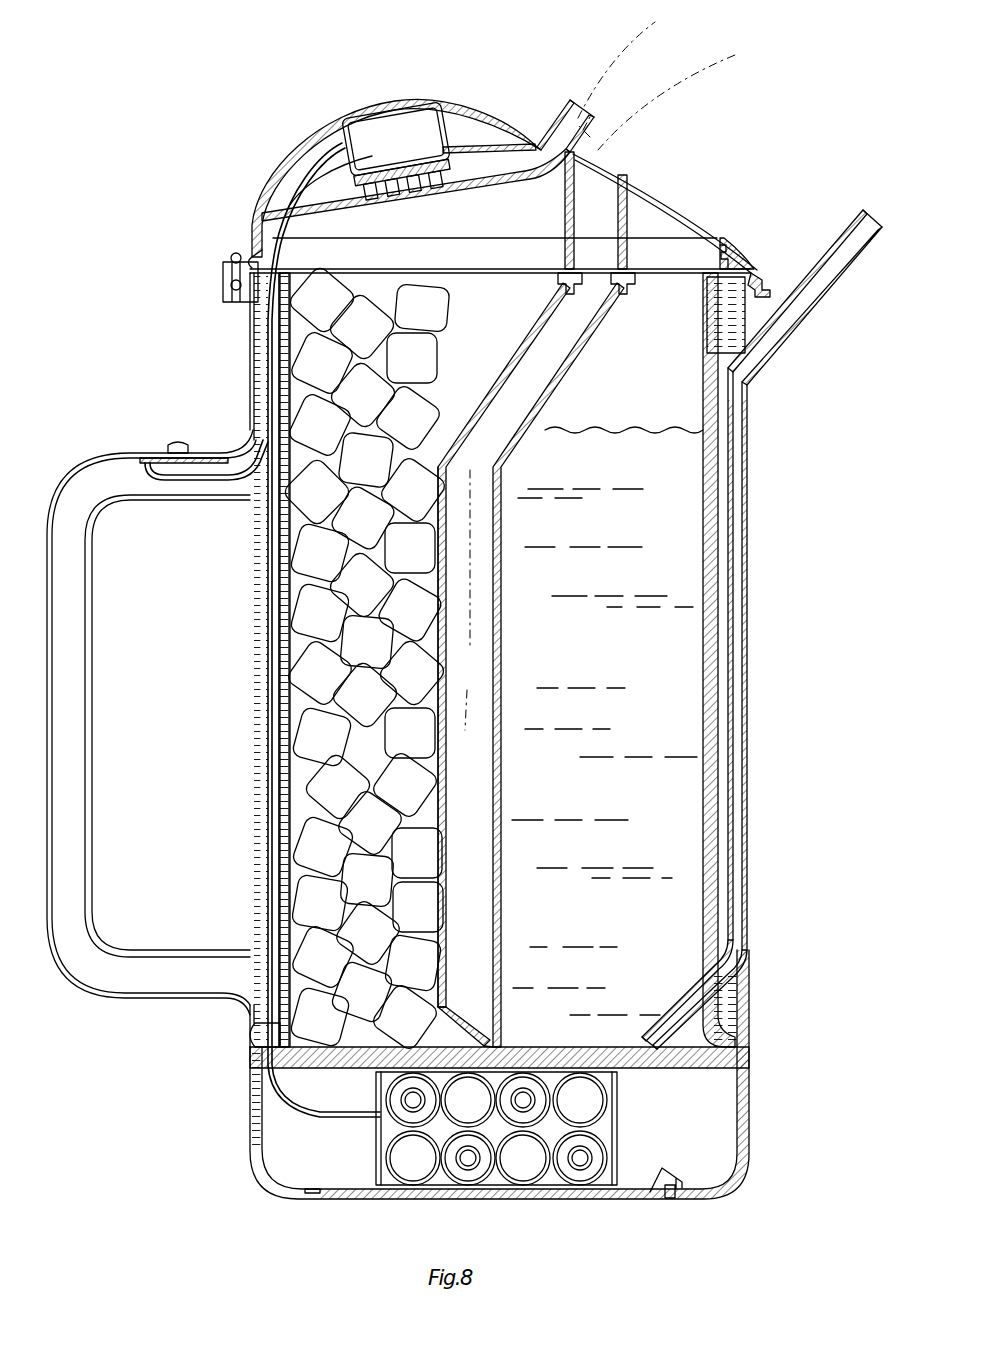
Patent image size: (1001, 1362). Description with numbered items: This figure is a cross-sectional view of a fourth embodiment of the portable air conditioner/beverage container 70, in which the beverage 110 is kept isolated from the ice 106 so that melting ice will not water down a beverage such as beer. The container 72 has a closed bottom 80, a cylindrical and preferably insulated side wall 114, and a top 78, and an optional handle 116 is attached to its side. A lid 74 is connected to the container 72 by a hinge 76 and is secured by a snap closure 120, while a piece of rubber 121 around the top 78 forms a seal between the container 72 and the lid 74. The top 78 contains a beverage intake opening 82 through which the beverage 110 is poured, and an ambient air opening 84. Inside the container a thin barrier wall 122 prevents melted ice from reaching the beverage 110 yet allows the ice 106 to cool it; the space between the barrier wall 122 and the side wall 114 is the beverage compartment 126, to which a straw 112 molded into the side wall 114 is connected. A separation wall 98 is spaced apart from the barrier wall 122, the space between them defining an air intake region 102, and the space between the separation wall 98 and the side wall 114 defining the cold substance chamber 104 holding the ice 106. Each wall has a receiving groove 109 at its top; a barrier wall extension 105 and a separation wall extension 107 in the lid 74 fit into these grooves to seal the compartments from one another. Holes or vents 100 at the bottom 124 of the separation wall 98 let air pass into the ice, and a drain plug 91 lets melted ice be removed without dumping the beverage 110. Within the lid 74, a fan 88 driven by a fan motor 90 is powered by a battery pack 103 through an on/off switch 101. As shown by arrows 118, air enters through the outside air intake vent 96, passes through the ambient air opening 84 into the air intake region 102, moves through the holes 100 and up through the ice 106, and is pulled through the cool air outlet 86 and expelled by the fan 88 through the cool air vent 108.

The portable air conditioner/beverage container 70 is at (186, 70).
The container 72 is at (243, 326).
The lid 74 is at (415, 108).
The hinge 76 is at (232, 284).
The top 78 is at (457, 272).
The closed bottom 80 is at (350, 1048).
The beverage intake opening 82 is at (684, 293).
The ambient air opening 84 is at (573, 230).
The cool air outlet 86 is at (252, 216).
The fan 88 is at (450, 178).
The fan motor 90 is at (398, 130).
The drain plug 91 is at (247, 1036).
The outside air intake vent 96 is at (613, 173).
The separation wall 98 is at (443, 657).
The holes or vents 100 is at (490, 1030).
The on/off switch 101 is at (175, 442).
The air intake region 102 is at (487, 513).
The battery pack 103 is at (400, 1143).
The cold substance chamber 104 is at (300, 537).
The barrier wall extension 105 is at (628, 224).
The ice 106 is at (300, 375).
The separation wall extension 107 is at (566, 198).
The cool air vent 108 is at (580, 100).
The receiving groove 109 is at (566, 265).
The beverage 110 is at (615, 432).
The straw 112 is at (845, 230).
The side wall 114 is at (722, 357).
The handle 116 is at (103, 458).
The arrows 118 is at (690, 60).
The snap closure 120 is at (742, 280).
The piece of rubber 121 is at (730, 267).
The barrier wall 122 is at (500, 772).
The bottom of the separation wall 124 is at (465, 1010).
The beverage compartment 126 is at (683, 500).